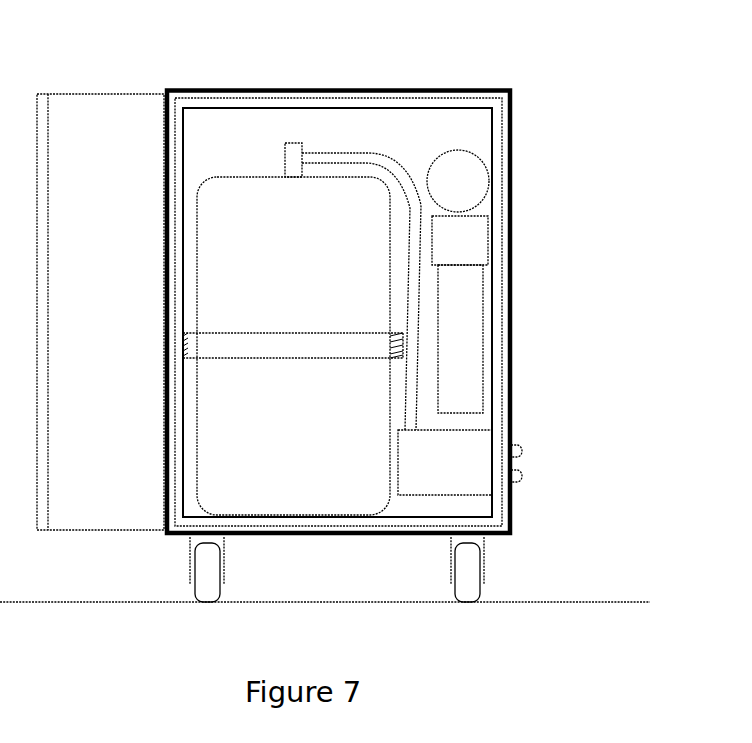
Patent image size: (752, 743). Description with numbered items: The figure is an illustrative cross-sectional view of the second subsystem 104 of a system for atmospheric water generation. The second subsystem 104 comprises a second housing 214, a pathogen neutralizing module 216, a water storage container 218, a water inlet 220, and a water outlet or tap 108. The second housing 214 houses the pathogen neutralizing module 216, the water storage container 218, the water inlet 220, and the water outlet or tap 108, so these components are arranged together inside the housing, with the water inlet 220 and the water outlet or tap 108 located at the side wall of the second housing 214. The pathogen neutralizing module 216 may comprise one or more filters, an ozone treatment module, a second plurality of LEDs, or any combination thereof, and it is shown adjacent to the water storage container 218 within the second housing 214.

The second subsystem 104 is at (354, 311).
The second housing 214 is at (476, 88).
The pathogen neutralizing module 216 is at (486, 225).
The water storage container 218 is at (248, 174).
The water inlet 220 is at (523, 448).
The water outlet or tap 108 is at (523, 475).